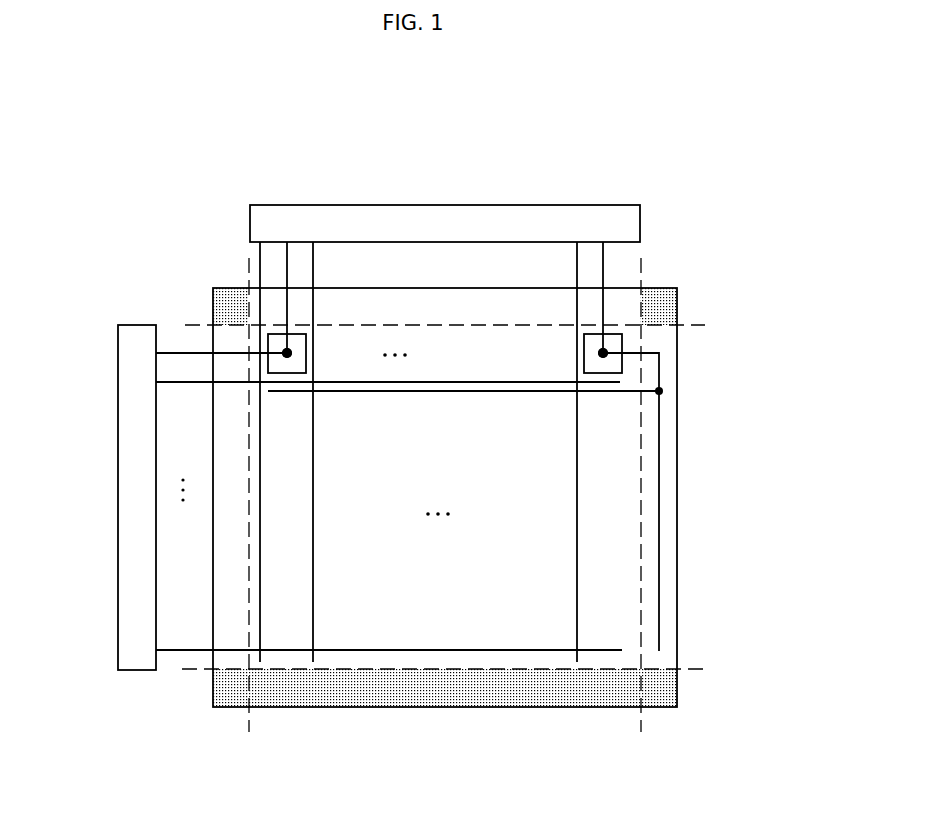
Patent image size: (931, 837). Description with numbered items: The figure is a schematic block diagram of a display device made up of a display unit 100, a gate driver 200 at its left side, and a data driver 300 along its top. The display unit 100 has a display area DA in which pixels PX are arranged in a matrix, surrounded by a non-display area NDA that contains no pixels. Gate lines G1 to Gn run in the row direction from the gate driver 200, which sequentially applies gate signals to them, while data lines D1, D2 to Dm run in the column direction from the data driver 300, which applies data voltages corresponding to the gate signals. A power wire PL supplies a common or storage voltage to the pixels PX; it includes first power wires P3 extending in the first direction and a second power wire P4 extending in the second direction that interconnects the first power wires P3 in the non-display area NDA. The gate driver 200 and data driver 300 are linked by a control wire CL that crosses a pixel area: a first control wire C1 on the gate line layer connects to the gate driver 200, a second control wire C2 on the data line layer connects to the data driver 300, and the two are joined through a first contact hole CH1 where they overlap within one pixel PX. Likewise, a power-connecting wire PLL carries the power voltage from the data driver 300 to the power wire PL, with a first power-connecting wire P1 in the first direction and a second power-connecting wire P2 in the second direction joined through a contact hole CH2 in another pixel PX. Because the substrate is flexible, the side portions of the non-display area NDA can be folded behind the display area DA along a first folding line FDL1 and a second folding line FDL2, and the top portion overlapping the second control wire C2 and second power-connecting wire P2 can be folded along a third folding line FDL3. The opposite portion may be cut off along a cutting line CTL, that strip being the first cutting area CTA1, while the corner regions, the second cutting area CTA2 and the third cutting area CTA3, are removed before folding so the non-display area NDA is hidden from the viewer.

The data driver 300 is at (445, 205).
The display unit 100 is at (677, 518).
The gate driver 200 is at (118, 448).
The first cutting area CTA1 is at (452, 697).
The second cutting area CTA2 is at (230, 303).
The third cutting area CTA3 is at (660, 305).
The first folding line FDL1 is at (249, 725).
The second folding line FDL2 is at (641, 722).
The third folding line FDL3 is at (700, 327).
The cutting line CTL is at (705, 672).
The first data line D1 is at (261, 487).
The second data line D2 is at (314, 510).
The m-th data line Dm is at (576, 510).
The first gate line G1 is at (180, 356).
The n-th gate line Gn is at (180, 648).
The pixel PX is at (307, 353).
The control wire CL is at (215, 252).
The first control wire C1 is at (180, 353).
The second control wire C2 is at (287, 260).
The power-connecting wire PLL is at (737, 217).
The first power-connecting wire P1 is at (651, 353).
The second power-connecting wire P2 is at (603, 268).
The first power wire P3 is at (622, 392).
The second power wire P4 is at (660, 455).
The power wire PL is at (730, 403).
The first contact hole CH1 is at (287, 358).
The first contact hole CH2 is at (603, 358).
The display area DA is at (620, 572).
The non-display area NDA is at (668, 630).